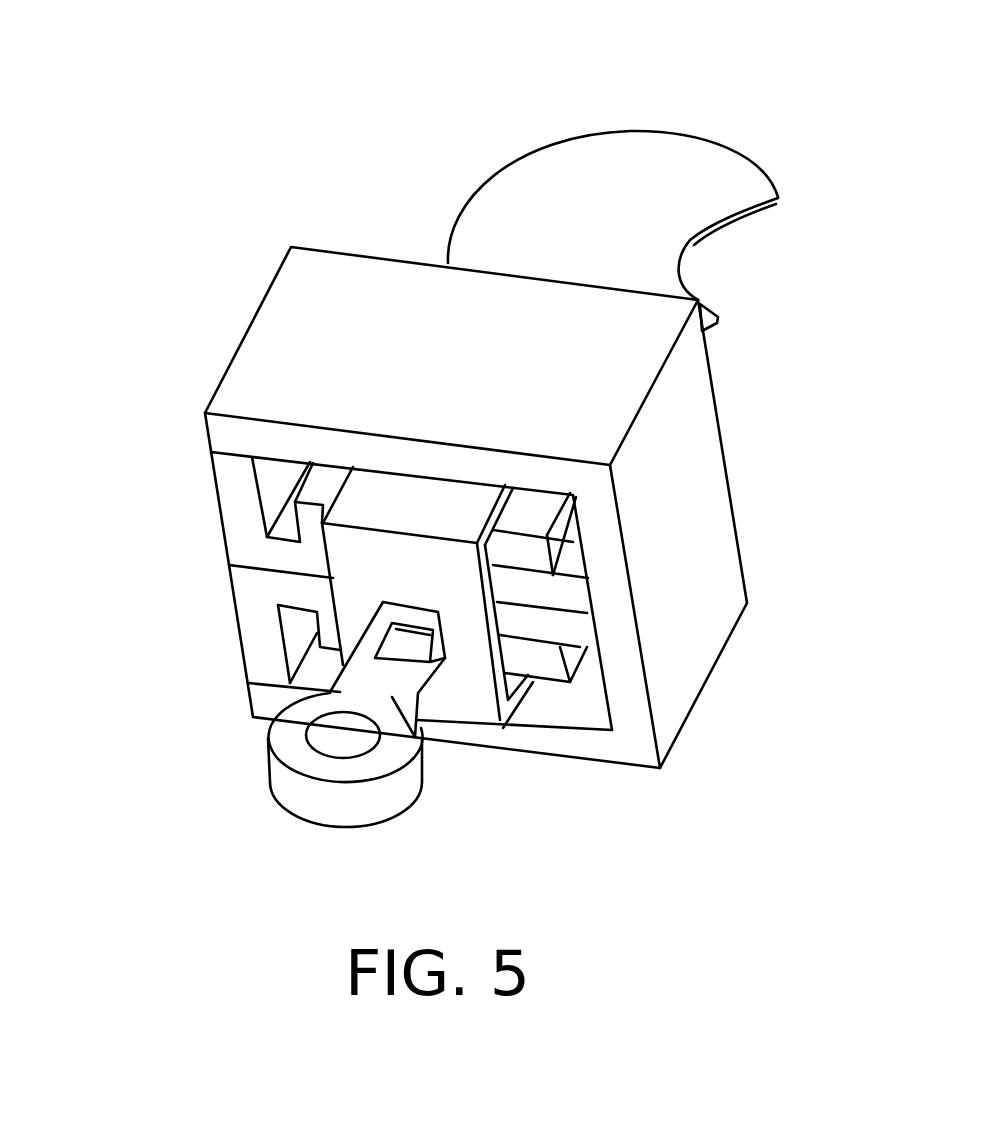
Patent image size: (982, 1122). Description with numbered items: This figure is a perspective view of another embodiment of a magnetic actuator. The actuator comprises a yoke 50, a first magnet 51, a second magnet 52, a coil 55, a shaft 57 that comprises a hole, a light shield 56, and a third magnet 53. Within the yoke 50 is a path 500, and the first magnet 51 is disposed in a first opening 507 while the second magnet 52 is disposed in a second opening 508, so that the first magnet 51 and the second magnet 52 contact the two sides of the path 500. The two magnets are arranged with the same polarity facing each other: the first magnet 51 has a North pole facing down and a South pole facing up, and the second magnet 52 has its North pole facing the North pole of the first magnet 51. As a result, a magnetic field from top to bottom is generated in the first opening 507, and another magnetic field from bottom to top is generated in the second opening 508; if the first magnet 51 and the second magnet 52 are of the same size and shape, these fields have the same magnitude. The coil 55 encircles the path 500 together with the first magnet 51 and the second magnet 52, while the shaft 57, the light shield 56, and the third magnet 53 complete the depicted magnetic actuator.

The yoke 50 is at (302, 345).
The path 500 is at (525, 595).
The first opening 507 is at (285, 485).
The second opening 508 is at (327, 632).
The first magnet 51 is at (525, 548).
The second magnet 52 is at (532, 662).
The third magnet 53 is at (405, 647).
The coil 55 is at (358, 563).
The light shield 56 is at (652, 183).
The shaft 57 is at (347, 738).